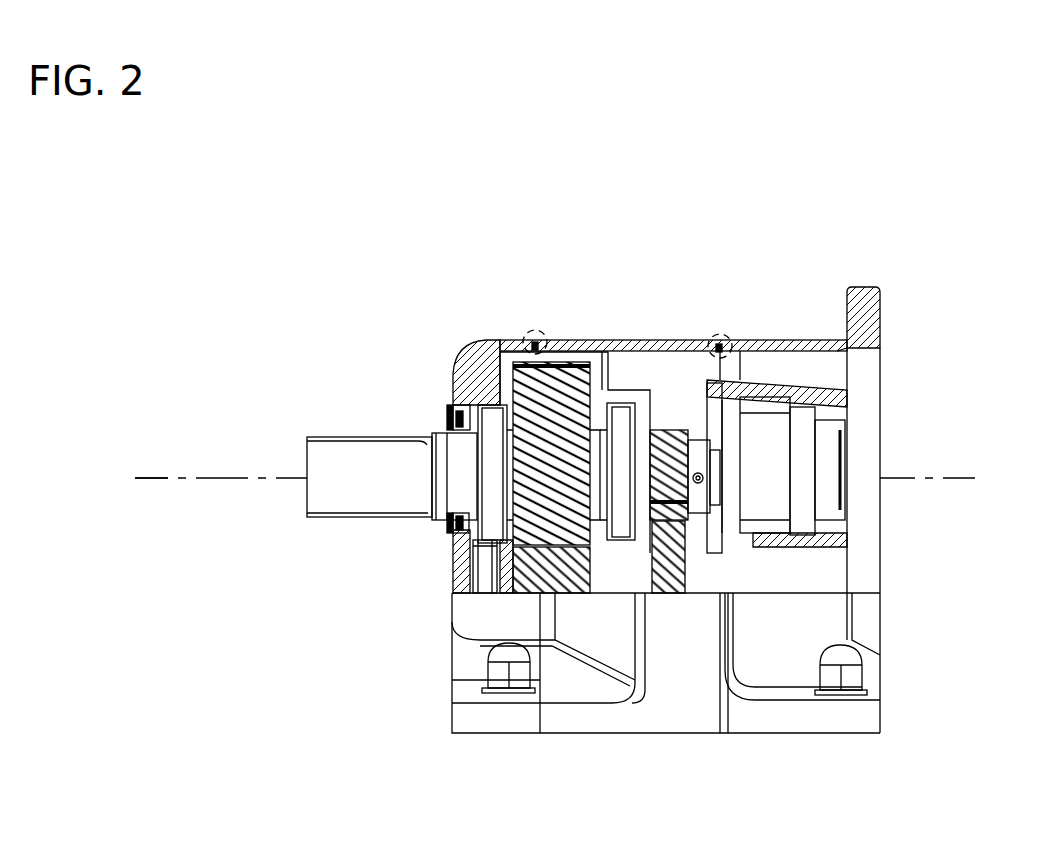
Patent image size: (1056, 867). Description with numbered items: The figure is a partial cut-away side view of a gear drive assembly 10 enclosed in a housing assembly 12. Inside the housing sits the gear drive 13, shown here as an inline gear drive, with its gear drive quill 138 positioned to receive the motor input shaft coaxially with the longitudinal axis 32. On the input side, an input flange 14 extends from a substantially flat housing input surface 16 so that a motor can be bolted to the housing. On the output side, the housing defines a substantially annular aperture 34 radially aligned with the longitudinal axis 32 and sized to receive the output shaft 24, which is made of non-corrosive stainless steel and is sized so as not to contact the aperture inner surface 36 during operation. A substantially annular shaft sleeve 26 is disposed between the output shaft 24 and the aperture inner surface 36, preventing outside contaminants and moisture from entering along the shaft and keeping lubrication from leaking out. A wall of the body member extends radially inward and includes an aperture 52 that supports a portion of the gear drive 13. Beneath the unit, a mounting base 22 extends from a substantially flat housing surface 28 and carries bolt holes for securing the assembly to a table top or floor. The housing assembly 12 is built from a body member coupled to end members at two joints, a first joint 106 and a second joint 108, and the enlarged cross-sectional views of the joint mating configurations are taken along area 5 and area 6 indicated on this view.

The gear drive assembly 10 is at (328, 183).
The housing assembly 12 is at (676, 338).
The input flange 14 is at (863, 300).
The housing input surface 16 is at (880, 536).
The output shaft 24 is at (358, 436).
The shaft sleeve 26 is at (447, 411).
The aperture inner surface 36 is at (450, 404).
The gear drive 13 is at (542, 541).
The annular aperture 34 is at (492, 558).
The aperture 52 is at (622, 396).
The gear drive quill 138 is at (790, 466).
The area 5 is at (528, 330).
The first joint 106 is at (534, 334).
The detail area 6 is at (730, 340).
The second joint 108 is at (719, 336).
The housing surface 28 is at (635, 735).
The mounting base 22 is at (800, 712).
The longitudinal axis 32 is at (158, 481).